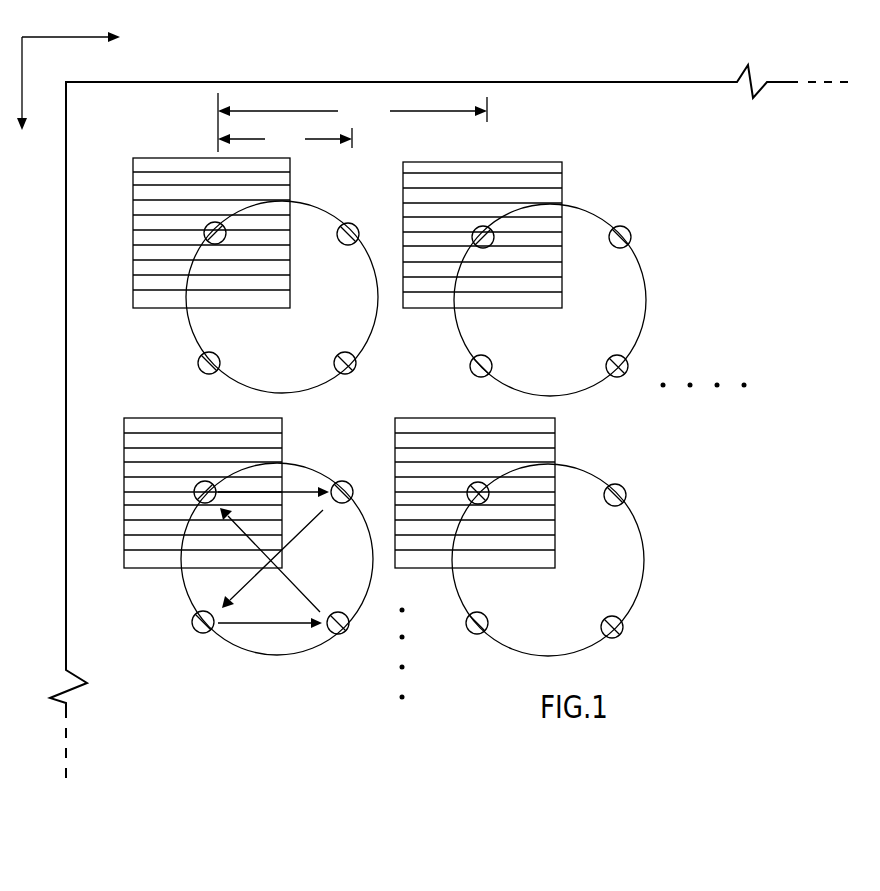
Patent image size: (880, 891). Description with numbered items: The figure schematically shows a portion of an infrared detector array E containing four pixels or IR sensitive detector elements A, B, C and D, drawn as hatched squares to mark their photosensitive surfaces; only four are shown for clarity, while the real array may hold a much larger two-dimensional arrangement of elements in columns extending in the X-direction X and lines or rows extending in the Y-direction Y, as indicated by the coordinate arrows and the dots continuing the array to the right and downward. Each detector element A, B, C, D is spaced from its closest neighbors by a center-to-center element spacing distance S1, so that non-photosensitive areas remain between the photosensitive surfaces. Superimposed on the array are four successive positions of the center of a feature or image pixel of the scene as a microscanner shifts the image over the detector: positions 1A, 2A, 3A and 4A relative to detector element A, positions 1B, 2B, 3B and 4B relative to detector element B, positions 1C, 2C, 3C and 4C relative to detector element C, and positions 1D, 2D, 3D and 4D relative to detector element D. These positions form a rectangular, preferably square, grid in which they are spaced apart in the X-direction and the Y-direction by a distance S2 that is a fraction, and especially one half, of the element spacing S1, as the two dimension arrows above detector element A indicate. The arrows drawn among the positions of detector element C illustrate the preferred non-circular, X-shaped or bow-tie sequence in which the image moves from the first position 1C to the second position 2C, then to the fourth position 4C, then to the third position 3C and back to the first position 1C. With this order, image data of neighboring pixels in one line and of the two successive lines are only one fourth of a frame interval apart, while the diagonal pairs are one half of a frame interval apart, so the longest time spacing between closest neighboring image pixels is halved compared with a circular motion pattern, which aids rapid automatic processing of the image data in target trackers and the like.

The detector element A is at (184, 158).
The detector element B is at (536, 162).
The detector element C is at (160, 568).
The detector element D is at (556, 425).
The detector array E is at (508, 82).
The center-to-center element spacing distance S1 is at (352, 122).
The position spacing distance S2 is at (285, 140).
The X-direction X is at (21, 101).
The Y-direction Y is at (82, 39).
The first image pixel position 1A is at (204, 230).
The second image pixel position 2A is at (350, 245).
The third image pixel position 3A is at (346, 338).
The fourth image pixel position 4A is at (220, 362).
The first image pixel position 1B is at (490, 247).
The second image pixel position 2B is at (630, 235).
The third image pixel position 3B is at (627, 362).
The fourth image pixel position 4B is at (492, 366).
The first image pixel position 1C is at (199, 481).
The second image pixel position 2C is at (345, 481).
The third image pixel position 3C is at (345, 634).
The fourth image pixel position 4C is at (196, 632).
The first image pixel position 1D is at (490, 497).
The second image pixel position 2D is at (645, 474).
The third image pixel position 3D is at (624, 630).
The fourth image pixel position 4D is at (501, 608).